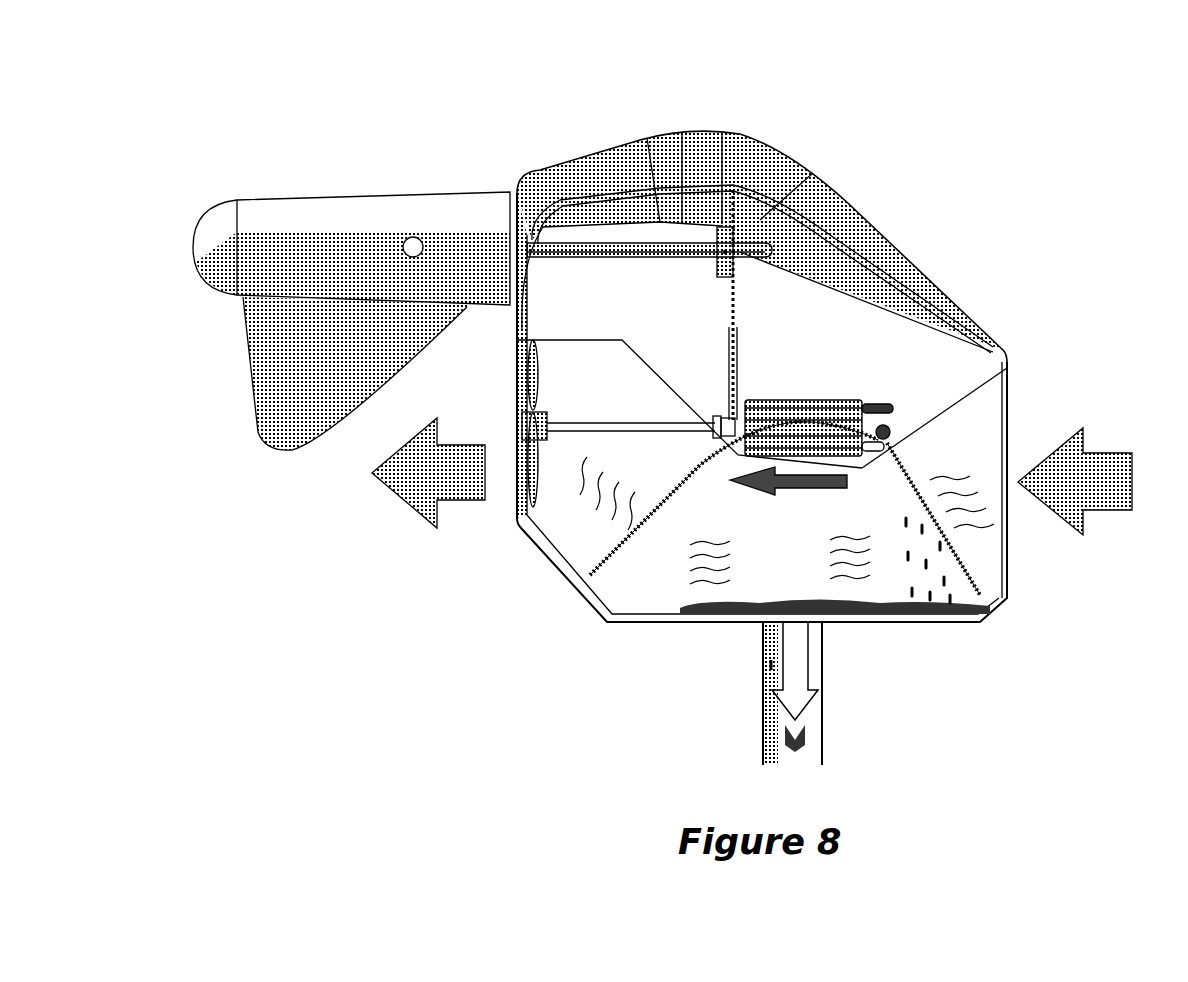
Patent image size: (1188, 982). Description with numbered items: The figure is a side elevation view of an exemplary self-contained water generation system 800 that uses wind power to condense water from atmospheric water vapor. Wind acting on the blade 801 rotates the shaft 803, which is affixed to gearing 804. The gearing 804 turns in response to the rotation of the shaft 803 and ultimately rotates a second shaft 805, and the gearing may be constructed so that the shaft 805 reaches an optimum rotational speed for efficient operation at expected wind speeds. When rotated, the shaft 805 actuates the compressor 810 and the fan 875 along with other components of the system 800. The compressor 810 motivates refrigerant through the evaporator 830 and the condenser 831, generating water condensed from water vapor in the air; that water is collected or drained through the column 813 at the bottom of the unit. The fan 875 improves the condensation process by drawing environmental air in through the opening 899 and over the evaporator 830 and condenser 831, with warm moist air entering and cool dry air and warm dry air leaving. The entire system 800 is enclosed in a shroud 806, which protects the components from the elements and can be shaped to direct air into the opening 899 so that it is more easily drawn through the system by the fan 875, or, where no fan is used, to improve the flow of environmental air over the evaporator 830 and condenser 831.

The system 800 is at (151, 132).
The blade 801 is at (296, 197).
The shaft 803 is at (658, 264).
The gearing 804 is at (733, 283).
The shaft 805 is at (648, 418).
The shroud 806 is at (877, 228).
The compressor 810 is at (800, 399).
The column 813 is at (762, 718).
The evaporator 830 is at (914, 476).
The condenser 831 is at (673, 493).
The fan 875 is at (527, 402).
The opening 899 is at (1010, 430).